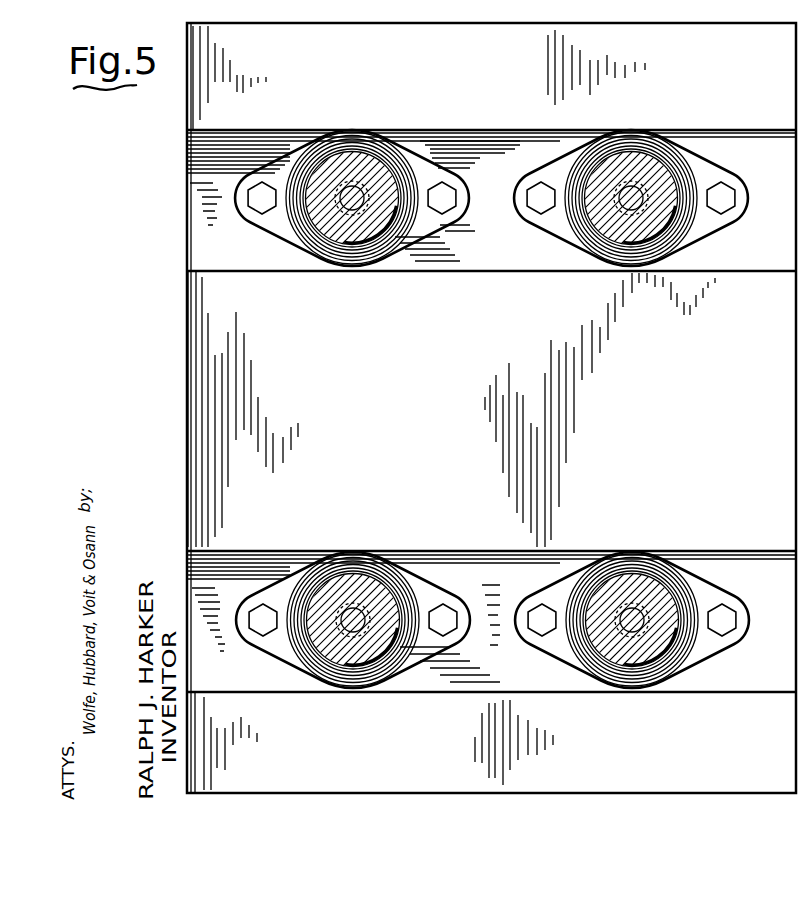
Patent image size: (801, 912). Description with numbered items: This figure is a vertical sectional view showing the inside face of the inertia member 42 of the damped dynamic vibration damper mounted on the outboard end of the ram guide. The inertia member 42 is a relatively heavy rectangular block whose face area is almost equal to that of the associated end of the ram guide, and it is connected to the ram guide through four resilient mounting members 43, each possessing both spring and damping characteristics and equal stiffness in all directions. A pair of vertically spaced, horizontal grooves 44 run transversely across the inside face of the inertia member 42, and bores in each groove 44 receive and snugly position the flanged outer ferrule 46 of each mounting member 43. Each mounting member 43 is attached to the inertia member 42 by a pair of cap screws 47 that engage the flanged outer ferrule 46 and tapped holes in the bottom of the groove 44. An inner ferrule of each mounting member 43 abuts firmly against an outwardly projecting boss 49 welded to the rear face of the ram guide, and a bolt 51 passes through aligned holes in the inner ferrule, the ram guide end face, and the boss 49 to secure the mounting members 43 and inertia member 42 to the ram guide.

The inertia member 42 is at (190, 365).
The resilient mounting member 43 is at (300, 246).
The groove 44 is at (195, 172).
The flanged outer ferrule 46 is at (416, 166).
The cap screw 47 is at (255, 203).
The boss 49 is at (348, 243).
The bolt 51 is at (353, 195).